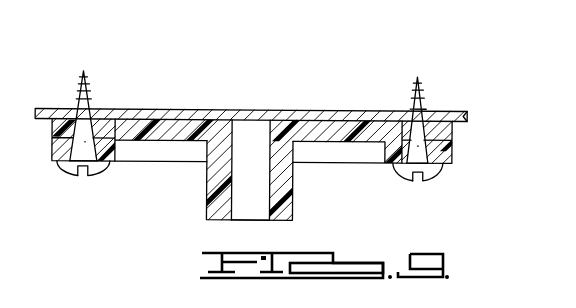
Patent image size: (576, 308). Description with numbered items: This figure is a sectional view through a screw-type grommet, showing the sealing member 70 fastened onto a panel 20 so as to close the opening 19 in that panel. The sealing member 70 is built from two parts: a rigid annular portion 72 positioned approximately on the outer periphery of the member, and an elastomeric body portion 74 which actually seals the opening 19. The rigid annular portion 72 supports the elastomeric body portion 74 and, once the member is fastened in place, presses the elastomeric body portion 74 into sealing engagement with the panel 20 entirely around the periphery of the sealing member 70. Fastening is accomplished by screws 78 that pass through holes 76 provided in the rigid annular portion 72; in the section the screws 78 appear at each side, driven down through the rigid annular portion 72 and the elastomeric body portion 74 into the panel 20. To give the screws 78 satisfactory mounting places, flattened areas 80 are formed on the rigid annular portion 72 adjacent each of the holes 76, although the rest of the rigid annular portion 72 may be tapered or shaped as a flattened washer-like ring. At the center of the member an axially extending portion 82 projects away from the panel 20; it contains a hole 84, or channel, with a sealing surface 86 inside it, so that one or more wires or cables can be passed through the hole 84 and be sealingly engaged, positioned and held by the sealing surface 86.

The opening 19 is at (143, 117).
The panel 20 is at (47, 109).
The sealing member 70 is at (239, 150).
The rigid annular portion 72 is at (53, 147).
The elastomeric body portion 74 is at (184, 128).
The holes 76 is at (91, 156).
The screws 78 is at (105, 164).
The flattened areas 80 is at (56, 162).
The axially extending portion 82 is at (207, 190).
The hole 84 is at (243, 186).
The sealing surface 86 is at (236, 160).